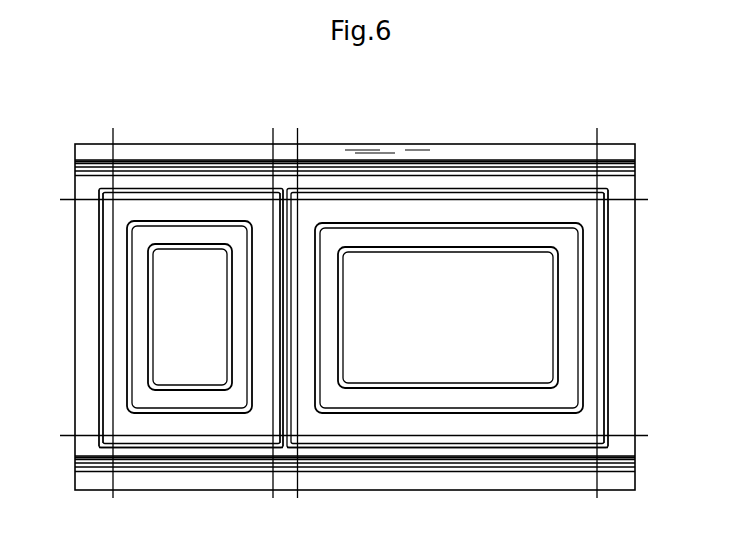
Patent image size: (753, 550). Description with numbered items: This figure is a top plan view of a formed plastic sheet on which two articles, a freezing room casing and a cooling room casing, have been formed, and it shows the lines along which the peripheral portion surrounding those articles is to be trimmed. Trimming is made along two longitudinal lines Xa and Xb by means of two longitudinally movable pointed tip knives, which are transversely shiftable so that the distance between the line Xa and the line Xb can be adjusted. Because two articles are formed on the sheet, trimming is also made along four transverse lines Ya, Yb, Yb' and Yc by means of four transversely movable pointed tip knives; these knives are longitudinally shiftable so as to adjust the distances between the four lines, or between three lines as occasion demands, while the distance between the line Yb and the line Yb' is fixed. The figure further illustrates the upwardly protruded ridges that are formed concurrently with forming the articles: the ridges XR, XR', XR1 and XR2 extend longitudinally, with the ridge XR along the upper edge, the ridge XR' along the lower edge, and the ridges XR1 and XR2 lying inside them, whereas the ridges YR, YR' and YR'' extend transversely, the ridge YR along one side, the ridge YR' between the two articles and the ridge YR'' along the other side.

The transverse trimming line Ya is at (112, 315).
The transverse trimming line Yb is at (274, 315).
The transverse trimming line Yb' is at (301, 315).
The transverse trimming line Yc is at (598, 315).
The longitudinal trimming line Xa is at (352, 200).
The longitudinal trimming line Xb is at (352, 436).
The longitudinally extending ridge XR is at (355, 130).
The longitudinally extending ridge XR1 is at (478, 190).
The longitudinally extending ridge XR2 is at (417, 447).
The longitudinally extending ridge XR' is at (355, 499).
The transversely extending ridge YR is at (64, 318).
The transversely extending ridge YR' is at (223, 365).
The transversely extending ridge YR'' is at (648, 318).